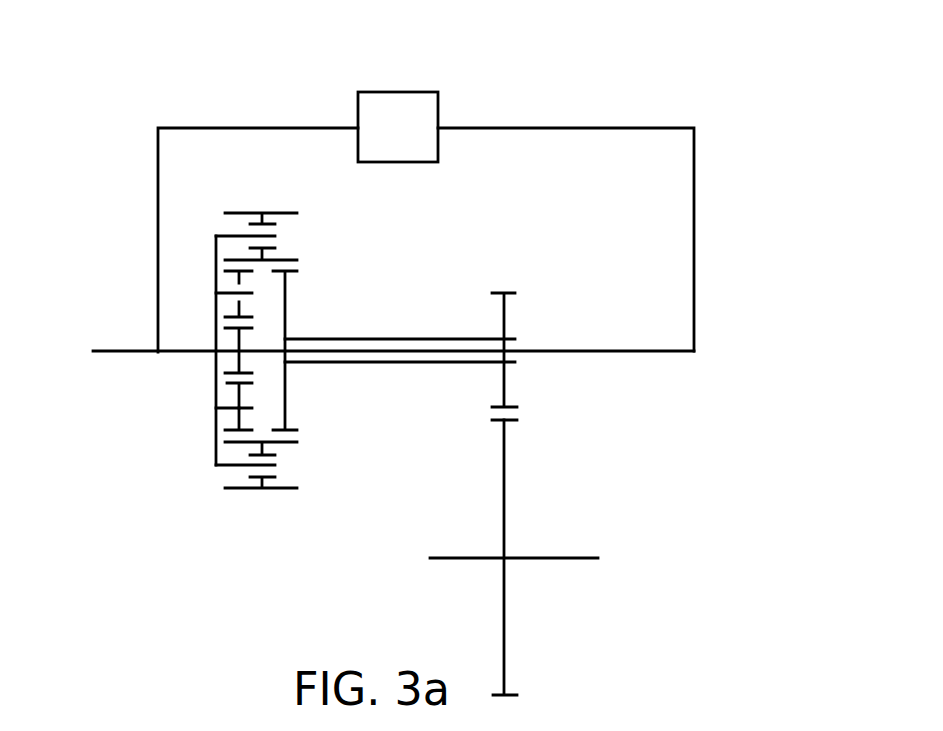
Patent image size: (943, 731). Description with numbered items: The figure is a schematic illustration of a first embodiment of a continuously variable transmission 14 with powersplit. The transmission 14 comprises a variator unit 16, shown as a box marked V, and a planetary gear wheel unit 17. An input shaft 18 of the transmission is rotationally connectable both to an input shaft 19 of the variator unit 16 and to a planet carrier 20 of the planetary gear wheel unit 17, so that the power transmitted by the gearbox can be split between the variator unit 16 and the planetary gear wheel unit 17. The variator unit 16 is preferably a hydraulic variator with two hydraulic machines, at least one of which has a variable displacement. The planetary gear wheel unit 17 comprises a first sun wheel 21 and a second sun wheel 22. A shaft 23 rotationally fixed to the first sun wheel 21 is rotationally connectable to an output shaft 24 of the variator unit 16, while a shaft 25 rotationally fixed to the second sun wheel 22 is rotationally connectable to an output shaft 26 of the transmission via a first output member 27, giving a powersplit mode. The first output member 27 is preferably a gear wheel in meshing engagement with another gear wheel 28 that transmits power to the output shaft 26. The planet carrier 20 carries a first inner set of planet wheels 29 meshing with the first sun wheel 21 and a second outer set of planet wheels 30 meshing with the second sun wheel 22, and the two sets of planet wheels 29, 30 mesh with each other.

The continuously variable transmission 14 is at (567, 102).
The variator unit 16 is at (427, 115).
The planetary gear wheel unit 17 is at (153, 519).
The input shaft 18 is at (115, 352).
The input shaft of the variator unit 19 is at (245, 128).
The planet carrier 20 is at (217, 392).
The first sun wheel 21 is at (237, 362).
The second sun wheel 22 is at (287, 398).
The shaft 23 is at (333, 351).
The output shaft of the variator unit 24 is at (655, 127).
The shaft 25 is at (408, 362).
The output shaft 26 is at (553, 558).
The first output member 27 is at (504, 392).
The gear wheel 28 is at (504, 472).
The first inner set of planet wheels 29 is at (227, 425).
The second outer set of planet wheels 30 is at (243, 490).